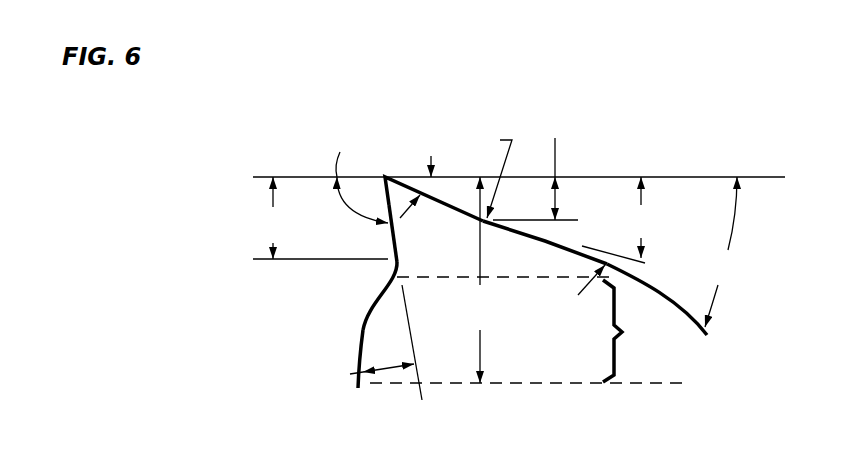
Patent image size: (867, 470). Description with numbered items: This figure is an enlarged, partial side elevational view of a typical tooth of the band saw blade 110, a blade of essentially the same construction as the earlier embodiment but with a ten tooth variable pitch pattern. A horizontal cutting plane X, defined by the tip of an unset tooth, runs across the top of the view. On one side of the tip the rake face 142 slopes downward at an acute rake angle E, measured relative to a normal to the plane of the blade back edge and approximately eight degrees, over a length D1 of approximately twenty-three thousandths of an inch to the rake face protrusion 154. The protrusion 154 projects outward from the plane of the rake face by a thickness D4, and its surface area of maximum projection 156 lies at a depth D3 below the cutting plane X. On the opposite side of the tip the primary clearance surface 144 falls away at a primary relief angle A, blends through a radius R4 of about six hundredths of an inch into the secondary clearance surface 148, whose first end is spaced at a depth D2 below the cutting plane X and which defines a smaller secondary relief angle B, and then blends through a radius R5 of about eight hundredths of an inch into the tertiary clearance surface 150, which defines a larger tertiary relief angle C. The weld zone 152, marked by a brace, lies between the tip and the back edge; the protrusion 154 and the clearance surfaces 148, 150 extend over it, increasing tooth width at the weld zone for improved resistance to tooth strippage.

The band saw blade 110 is at (598, 80).
The rake face 142 is at (397, 242).
The primary clearance surface 144 is at (402, 177).
The secondary clearance surface 148 is at (537, 243).
The tertiary clearance surface 150 is at (668, 297).
The electron beam weld zone 152 is at (640, 331).
The rake face protrusion 154 is at (357, 322).
The surface area of maximum projection 156 is at (361, 338).
The cutting plane X is at (320, 177).
The primary acute relief angle A is at (418, 173).
The secondary acute relief angle B is at (615, 220).
The tertiary acute relief angle C is at (722, 252).
The acute rake angle E is at (361, 175).
The length of the rake face D1 is at (320, 218).
The depth of the secondary clearance surface D2 is at (535, 161).
The depth of the surface area of maximum projection D3 is at (482, 280).
The thickness of the rake face protrusion D4 is at (362, 378).
The radius between primary and secondary clearance surfaces R4 is at (487, 174).
The radius between secondary and tertiary clearance surfaces R5 is at (581, 296).